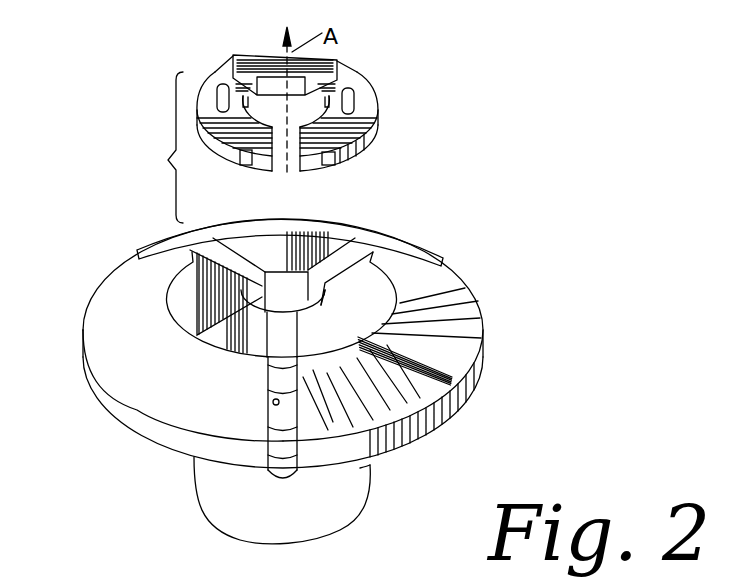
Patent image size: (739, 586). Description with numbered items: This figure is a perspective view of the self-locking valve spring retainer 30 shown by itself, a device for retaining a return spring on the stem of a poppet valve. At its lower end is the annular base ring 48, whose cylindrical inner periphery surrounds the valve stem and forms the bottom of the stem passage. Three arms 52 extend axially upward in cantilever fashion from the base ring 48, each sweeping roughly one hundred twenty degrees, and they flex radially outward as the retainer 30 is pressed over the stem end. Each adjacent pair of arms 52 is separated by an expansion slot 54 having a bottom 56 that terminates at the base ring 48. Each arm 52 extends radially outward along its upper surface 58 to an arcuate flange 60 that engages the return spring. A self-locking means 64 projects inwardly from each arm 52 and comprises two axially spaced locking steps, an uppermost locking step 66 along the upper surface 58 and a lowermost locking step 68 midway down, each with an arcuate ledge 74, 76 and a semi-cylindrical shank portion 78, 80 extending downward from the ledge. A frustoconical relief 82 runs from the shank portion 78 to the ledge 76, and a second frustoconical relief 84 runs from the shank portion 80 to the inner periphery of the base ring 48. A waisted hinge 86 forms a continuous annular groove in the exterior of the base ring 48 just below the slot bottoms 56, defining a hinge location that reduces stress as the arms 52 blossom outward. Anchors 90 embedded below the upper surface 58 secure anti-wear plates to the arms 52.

The self-locking valve spring retainer 30 is at (498, 263).
The annular base ring 48 is at (195, 517).
The arms 52 is at (382, 230).
The expansion slot 54 is at (137, 252).
The bottom of expansion slot 56 is at (287, 474).
The upper surface of arm 58 is at (312, 223).
The arcuate flange 60 is at (97, 382).
The self-locking means 64 is at (255, 284).
The uppermost locking step 66 is at (288, 245).
The lowermost locking step 68 is at (297, 365).
The arcuate ledge of uppermost locking step 74 is at (367, 107).
The arcuate ledge of lowermost locking step 76 is at (285, 340).
The semi-cylindrical shank portion of uppermost locking step 78 is at (307, 288).
The semi-cylindrical shank portion of lowermost locking step 80 is at (267, 373).
The frustoconical relief 82 is at (273, 307).
The frustoconical relief 84 is at (267, 423).
The waisted hinge 86 is at (370, 468).
The anchors 90 is at (217, 74).